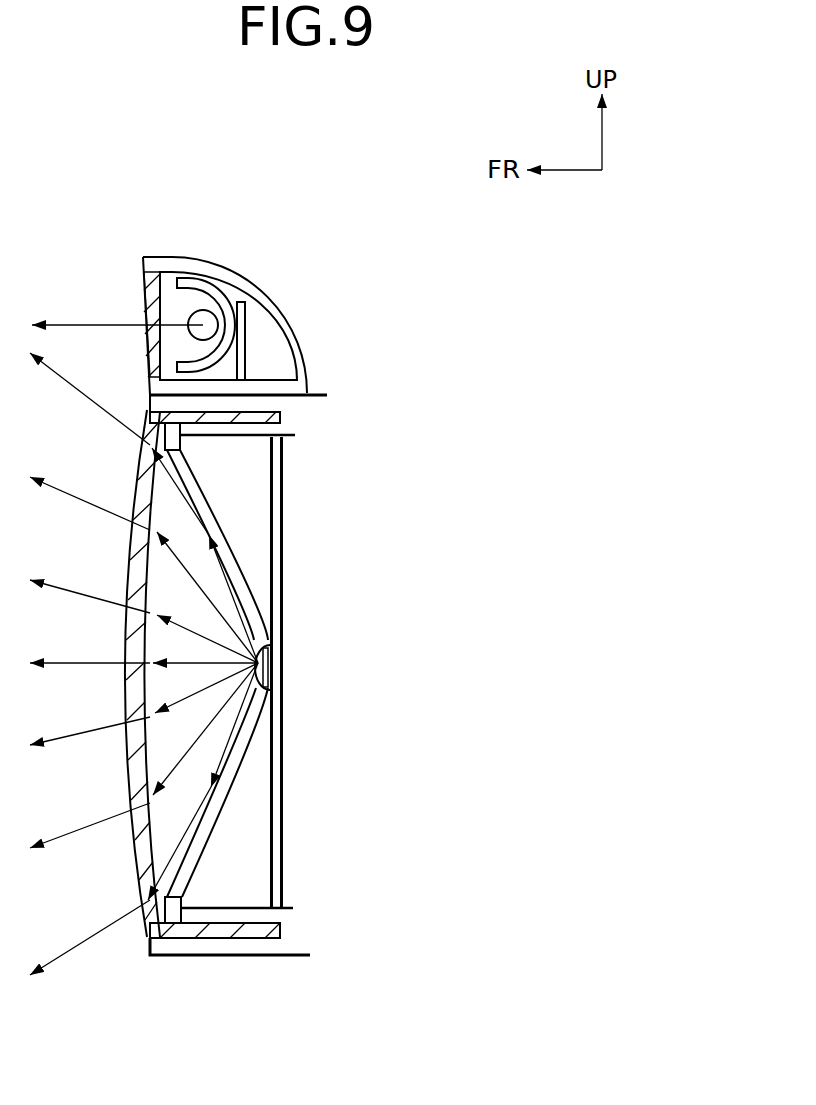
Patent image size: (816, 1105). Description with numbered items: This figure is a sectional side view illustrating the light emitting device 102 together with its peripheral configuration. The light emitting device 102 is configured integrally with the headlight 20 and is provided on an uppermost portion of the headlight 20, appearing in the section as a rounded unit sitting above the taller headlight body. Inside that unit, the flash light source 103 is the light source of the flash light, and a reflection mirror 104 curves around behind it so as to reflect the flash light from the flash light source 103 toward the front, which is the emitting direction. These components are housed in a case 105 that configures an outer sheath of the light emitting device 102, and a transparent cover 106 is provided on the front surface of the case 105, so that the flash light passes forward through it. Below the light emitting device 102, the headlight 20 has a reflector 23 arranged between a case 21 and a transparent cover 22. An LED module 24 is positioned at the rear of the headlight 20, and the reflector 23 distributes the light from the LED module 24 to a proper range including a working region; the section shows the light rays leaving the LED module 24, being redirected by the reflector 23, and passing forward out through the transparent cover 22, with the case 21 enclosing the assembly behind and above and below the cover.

The light emitting device 102 is at (165, 251).
The flash light source 103 is at (205, 322).
The reflection mirror 104 is at (207, 289).
The case 105 is at (277, 297).
The transparent cover 106 is at (142, 293).
The headlight 20 is at (204, 959).
The case 21 is at (291, 958).
The transparent cover 22 is at (143, 926).
The reflector 23 is at (222, 538).
The LED module 24 is at (272, 665).